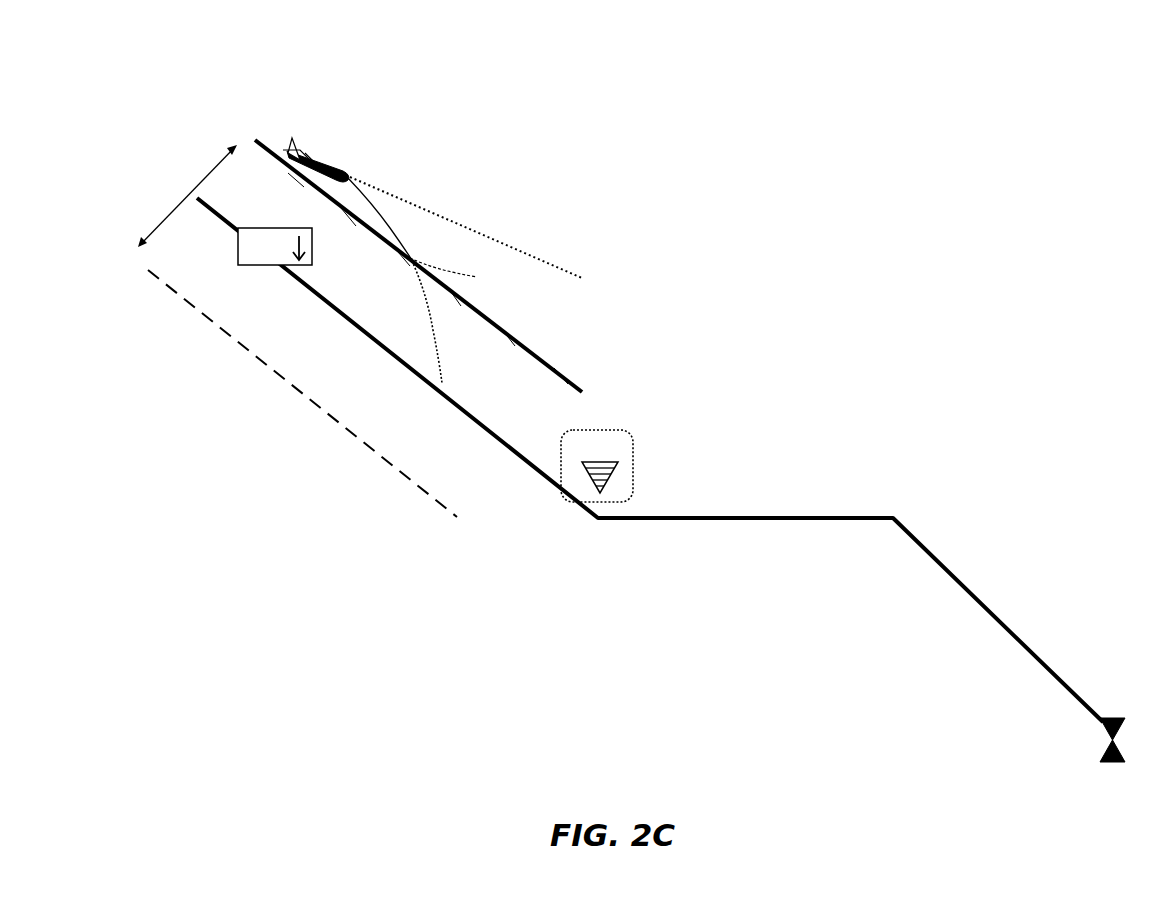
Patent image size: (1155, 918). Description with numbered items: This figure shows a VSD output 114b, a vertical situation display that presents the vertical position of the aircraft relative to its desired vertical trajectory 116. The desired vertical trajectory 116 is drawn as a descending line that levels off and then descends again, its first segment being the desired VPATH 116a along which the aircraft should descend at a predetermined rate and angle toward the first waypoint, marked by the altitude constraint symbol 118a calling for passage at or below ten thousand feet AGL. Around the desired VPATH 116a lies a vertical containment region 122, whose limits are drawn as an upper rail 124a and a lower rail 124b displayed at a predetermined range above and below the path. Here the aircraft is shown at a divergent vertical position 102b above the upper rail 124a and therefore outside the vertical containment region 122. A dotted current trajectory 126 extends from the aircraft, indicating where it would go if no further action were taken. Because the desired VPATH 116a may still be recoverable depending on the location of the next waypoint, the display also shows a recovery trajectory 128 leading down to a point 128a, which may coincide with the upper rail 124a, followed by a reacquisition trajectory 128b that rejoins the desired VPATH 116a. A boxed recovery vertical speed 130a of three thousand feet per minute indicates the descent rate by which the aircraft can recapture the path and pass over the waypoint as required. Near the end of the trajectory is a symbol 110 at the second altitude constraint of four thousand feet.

The VSD output 114b is at (98, 98).
The desired vertical trajectory 116 is at (793, 498).
The first desired vertical path 116a is at (568, 500).
The altitude constraint symbol 118a is at (634, 466).
The vertical containment region 122 is at (212, 162).
The upper rail 124a is at (563, 378).
The lower rail 124b is at (283, 384).
The current trajectory 126 is at (508, 248).
The recovery trajectory 128 is at (410, 252).
The point of reacquisition 128a is at (469, 272).
The reacquisition trajectory 128b is at (424, 302).
The recovery vertical speed 130a is at (236, 243).
The divergent vertical position 102b is at (289, 149).
The destination waypoint 110 is at (1113, 764).